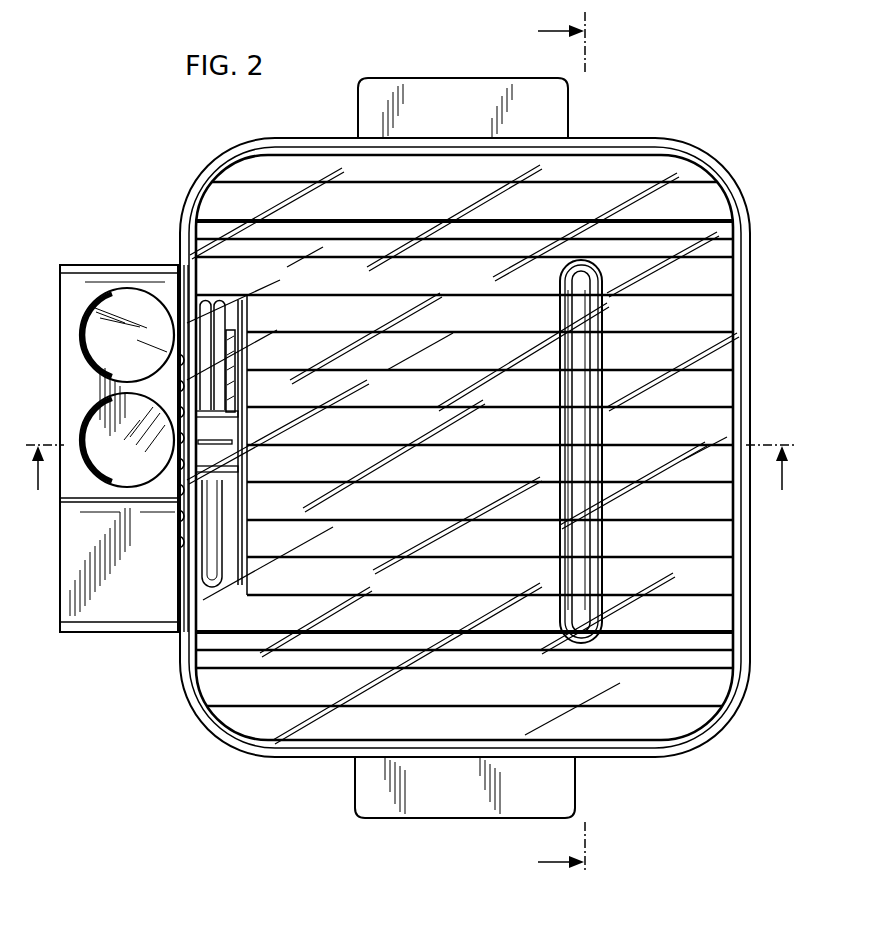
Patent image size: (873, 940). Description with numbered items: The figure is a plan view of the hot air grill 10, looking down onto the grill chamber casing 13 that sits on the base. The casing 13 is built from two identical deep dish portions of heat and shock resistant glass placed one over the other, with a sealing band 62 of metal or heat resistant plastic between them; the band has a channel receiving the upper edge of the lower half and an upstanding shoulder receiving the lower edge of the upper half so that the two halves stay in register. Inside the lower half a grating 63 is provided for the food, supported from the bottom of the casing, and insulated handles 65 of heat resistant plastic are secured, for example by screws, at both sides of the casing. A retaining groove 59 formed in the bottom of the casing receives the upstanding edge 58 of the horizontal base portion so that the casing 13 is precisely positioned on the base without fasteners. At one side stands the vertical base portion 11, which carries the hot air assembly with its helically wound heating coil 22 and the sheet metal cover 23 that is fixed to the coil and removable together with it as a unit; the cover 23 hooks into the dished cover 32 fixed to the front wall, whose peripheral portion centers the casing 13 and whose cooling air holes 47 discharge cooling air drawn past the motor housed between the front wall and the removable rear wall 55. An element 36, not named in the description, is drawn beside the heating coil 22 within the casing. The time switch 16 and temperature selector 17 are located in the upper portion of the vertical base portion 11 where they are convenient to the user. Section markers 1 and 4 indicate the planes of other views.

The section line 1- 1 is at (410, 486).
The section line 4- 4 is at (561, 453).
The hot air grill 10 is at (202, 805).
The vertical base portion 11 is at (103, 640).
The grill chamber casing 13 is at (692, 763).
The time switch 16 is at (108, 455).
The temperature selector 17 is at (127, 302).
The helically wound heating coil 22 is at (225, 525).
The cover 23 is at (240, 400).
The dished cover 32 is at (178, 545).
The thermostat element 36 is at (232, 345).
The cooling air holes 47 is at (178, 505).
The removable rear wall 55 is at (63, 270).
The upstanding edge 58 is at (585, 362).
The retaining groove 59 is at (593, 328).
The sealing band 62 is at (641, 141).
The grating 63 is at (285, 600).
The insulated handles 65 is at (573, 116).